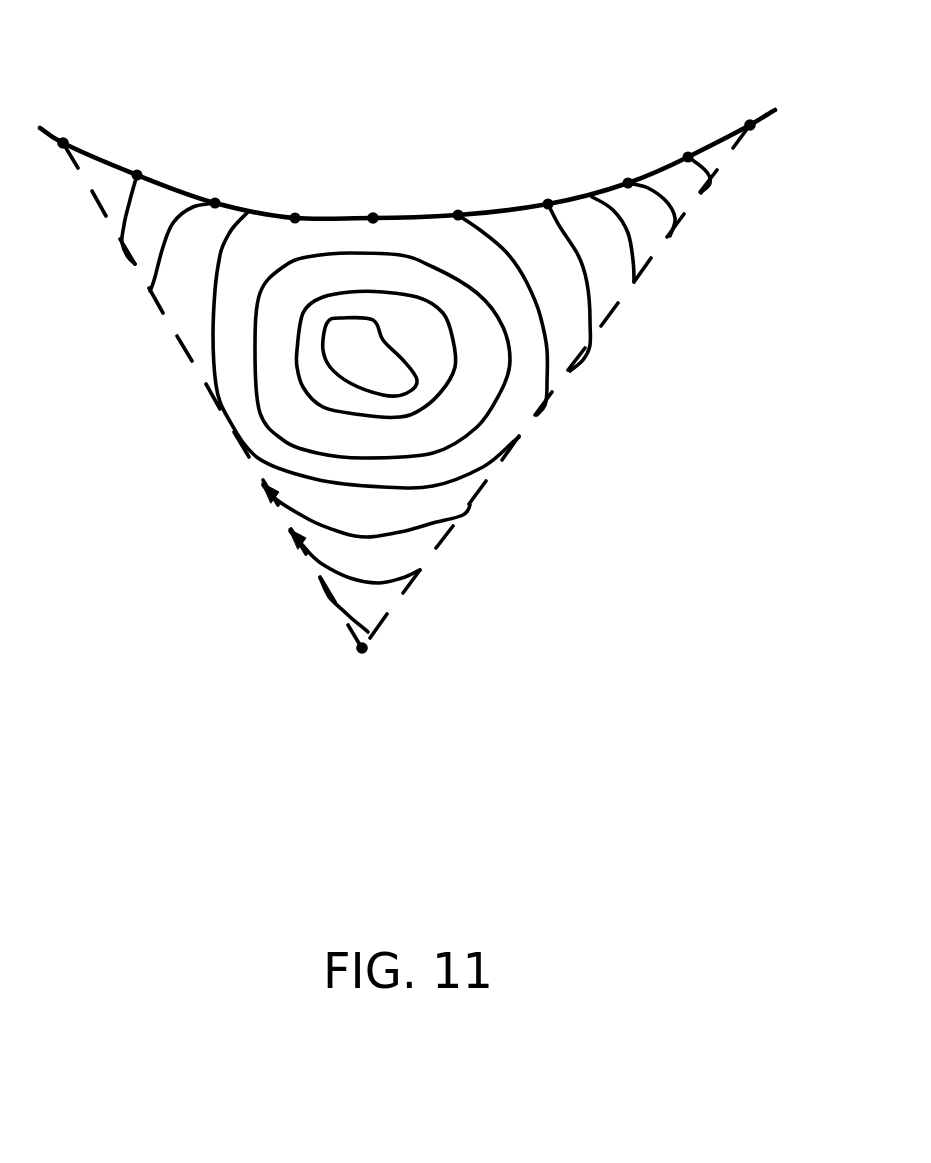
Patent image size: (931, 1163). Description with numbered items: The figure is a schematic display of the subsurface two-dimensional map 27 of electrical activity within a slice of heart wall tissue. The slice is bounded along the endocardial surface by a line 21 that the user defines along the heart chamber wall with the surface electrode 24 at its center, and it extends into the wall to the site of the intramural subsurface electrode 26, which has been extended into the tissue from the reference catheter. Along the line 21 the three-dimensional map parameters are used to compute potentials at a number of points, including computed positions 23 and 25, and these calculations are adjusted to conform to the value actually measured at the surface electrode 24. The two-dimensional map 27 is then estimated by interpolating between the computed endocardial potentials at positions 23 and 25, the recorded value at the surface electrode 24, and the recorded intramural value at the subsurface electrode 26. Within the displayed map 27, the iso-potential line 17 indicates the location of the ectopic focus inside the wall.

The iso-potential line 17 is at (362, 340).
The line 21 is at (513, 208).
The computed position 23 is at (64, 138).
The surface electrode 24 is at (373, 214).
The computed position 25 is at (750, 121).
The subsurface electrode 26 is at (362, 652).
The two-dimensional map 27 is at (646, 462).